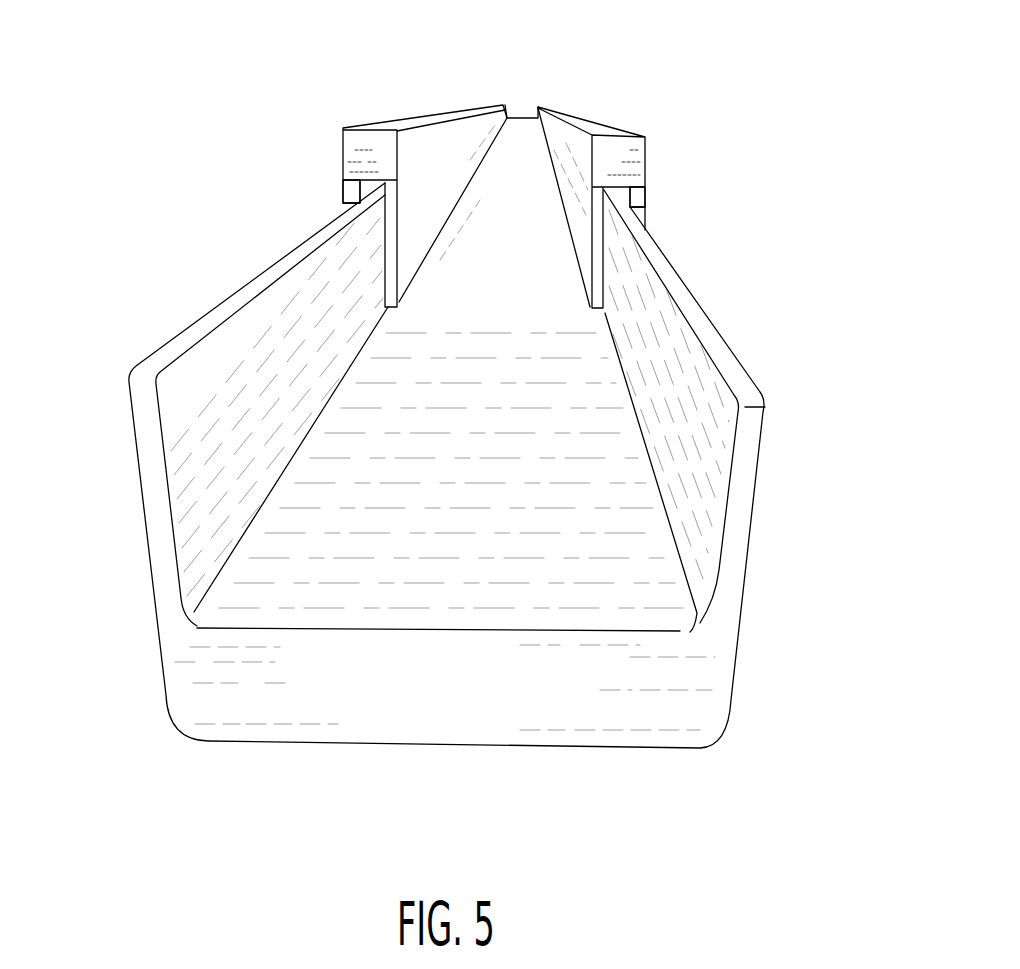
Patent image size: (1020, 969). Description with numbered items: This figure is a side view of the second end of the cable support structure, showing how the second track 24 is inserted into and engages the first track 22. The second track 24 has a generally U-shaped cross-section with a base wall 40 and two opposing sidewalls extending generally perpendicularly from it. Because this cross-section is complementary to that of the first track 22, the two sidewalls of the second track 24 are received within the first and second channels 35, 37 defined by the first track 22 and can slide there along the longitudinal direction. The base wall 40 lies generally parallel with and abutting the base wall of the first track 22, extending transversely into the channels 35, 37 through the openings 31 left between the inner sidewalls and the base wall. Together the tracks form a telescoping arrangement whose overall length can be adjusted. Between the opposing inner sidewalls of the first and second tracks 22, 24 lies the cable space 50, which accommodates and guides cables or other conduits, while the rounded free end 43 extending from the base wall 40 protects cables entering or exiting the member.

The first track 22 is at (622, 109).
The second track 24 is at (740, 299).
The opening 31 is at (410, 300).
The first channel 35 is at (634, 197).
The second channel 37 is at (356, 190).
The base wall 40 is at (547, 562).
The rounded free end 43 is at (653, 722).
The cable space 50 is at (513, 172).